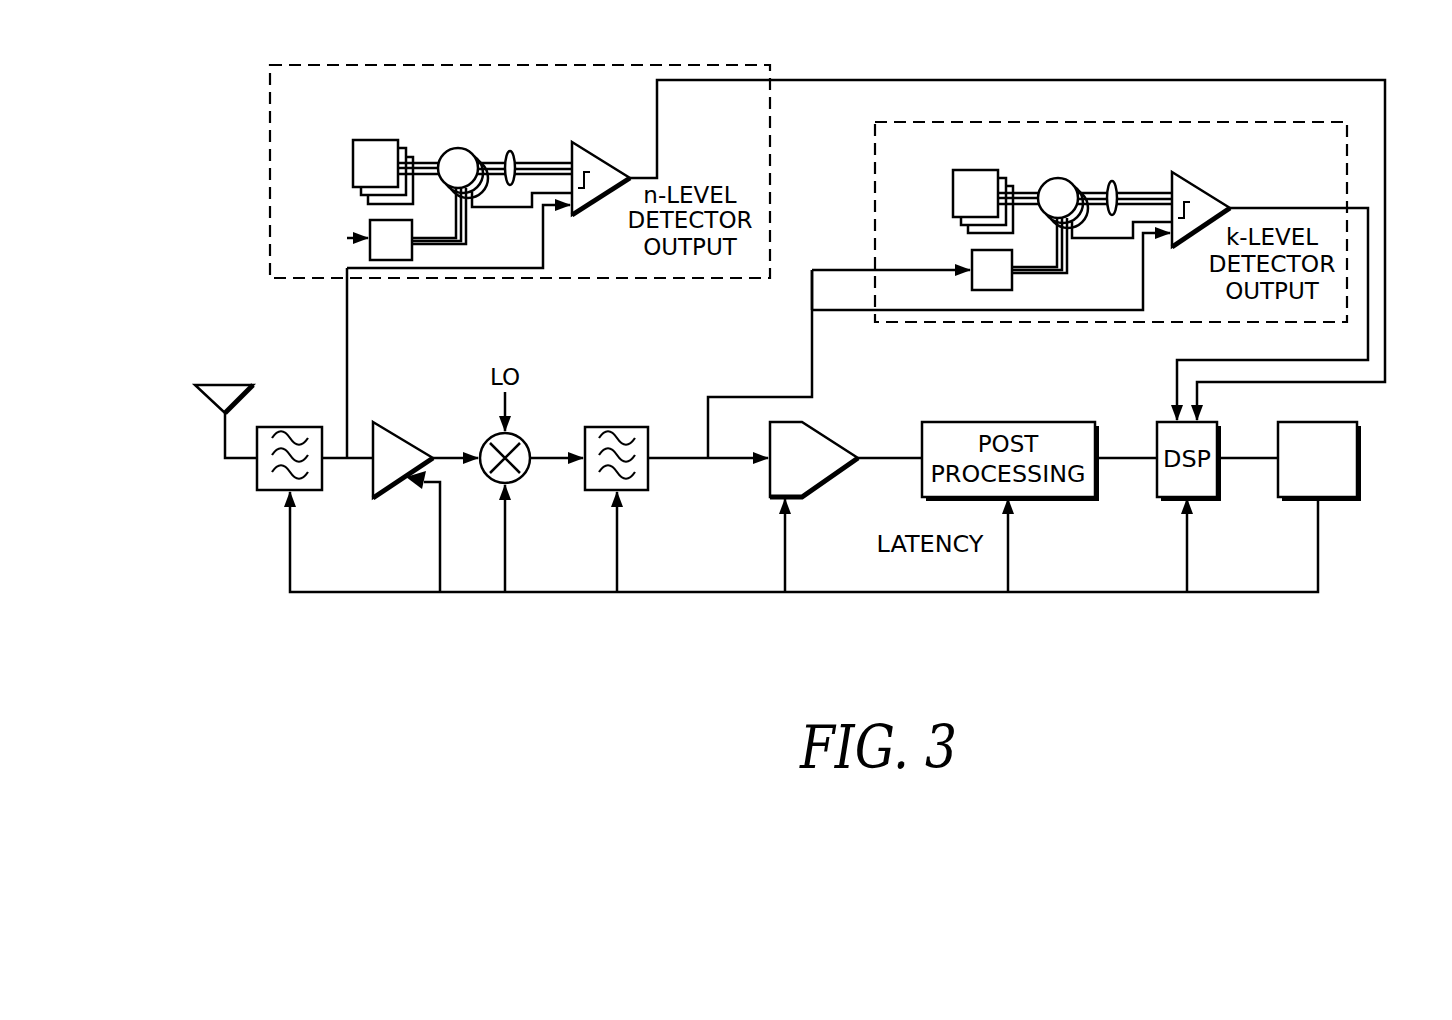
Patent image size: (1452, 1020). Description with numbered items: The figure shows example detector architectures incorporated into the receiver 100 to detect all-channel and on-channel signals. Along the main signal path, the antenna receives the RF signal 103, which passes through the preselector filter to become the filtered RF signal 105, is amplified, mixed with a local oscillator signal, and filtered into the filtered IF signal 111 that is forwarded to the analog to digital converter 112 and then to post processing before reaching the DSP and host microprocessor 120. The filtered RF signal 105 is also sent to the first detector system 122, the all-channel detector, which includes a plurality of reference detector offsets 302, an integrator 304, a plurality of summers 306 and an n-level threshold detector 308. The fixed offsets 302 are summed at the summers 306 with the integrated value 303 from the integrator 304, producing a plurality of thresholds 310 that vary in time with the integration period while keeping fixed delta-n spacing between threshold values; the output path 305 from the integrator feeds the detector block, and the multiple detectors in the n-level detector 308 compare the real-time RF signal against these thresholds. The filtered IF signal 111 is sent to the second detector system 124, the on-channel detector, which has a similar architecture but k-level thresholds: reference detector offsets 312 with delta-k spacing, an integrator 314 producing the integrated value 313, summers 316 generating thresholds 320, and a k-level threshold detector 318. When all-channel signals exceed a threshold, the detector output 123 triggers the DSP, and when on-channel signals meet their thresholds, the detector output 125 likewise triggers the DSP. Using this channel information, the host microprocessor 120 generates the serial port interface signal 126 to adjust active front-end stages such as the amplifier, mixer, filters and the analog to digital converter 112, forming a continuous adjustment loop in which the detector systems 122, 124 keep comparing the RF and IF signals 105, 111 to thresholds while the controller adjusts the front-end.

The receiver 100 is at (1441, 590).
The RF signal 103 is at (225, 438).
The filtered RF signal 105 is at (349, 462).
The filtered IF signal 111 is at (678, 458).
The analog to digital converter 112 is at (830, 442).
The host microprocessor 120 is at (1358, 460).
The first detector system 122 is at (748, 64).
The detector output 123 is at (1022, 80).
The second detector system 124 is at (875, 212).
The detector output 125 is at (1310, 208).
The serial port interface signal 126 is at (1318, 545).
The reference detector offsets 302 is at (352, 163).
The integrated value 303 is at (470, 212).
The integrator 304 is at (360, 236).
The integrator feedback line 305 is at (544, 249).
The summers 306 is at (457, 146).
The n-level threshold detector 308 is at (578, 145).
The thresholds 310 is at (510, 152).
The reference detector offsets 312 is at (953, 192).
The integrated value 313 is at (1102, 238).
The integrator 314 is at (972, 282).
The summers 316 is at (1058, 178).
The k-level threshold detector 318 is at (1195, 186).
The bus indicator 320 is at (1112, 181).